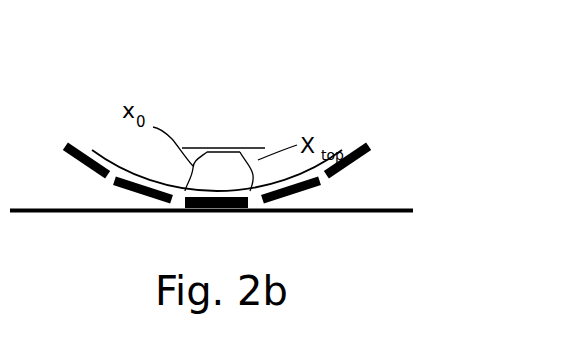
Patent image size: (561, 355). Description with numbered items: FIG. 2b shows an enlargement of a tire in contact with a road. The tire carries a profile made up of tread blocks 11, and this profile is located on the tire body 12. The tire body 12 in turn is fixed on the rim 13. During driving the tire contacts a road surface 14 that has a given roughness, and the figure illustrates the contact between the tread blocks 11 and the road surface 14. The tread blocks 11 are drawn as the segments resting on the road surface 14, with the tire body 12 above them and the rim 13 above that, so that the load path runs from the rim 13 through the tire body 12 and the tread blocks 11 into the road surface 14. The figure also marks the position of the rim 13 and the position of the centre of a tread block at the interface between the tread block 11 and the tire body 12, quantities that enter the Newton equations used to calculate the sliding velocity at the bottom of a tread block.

The tread blocks 11 is at (82, 163).
The tire body 12 is at (232, 160).
The rim 13 is at (212, 147).
The road surface 14 is at (347, 213).